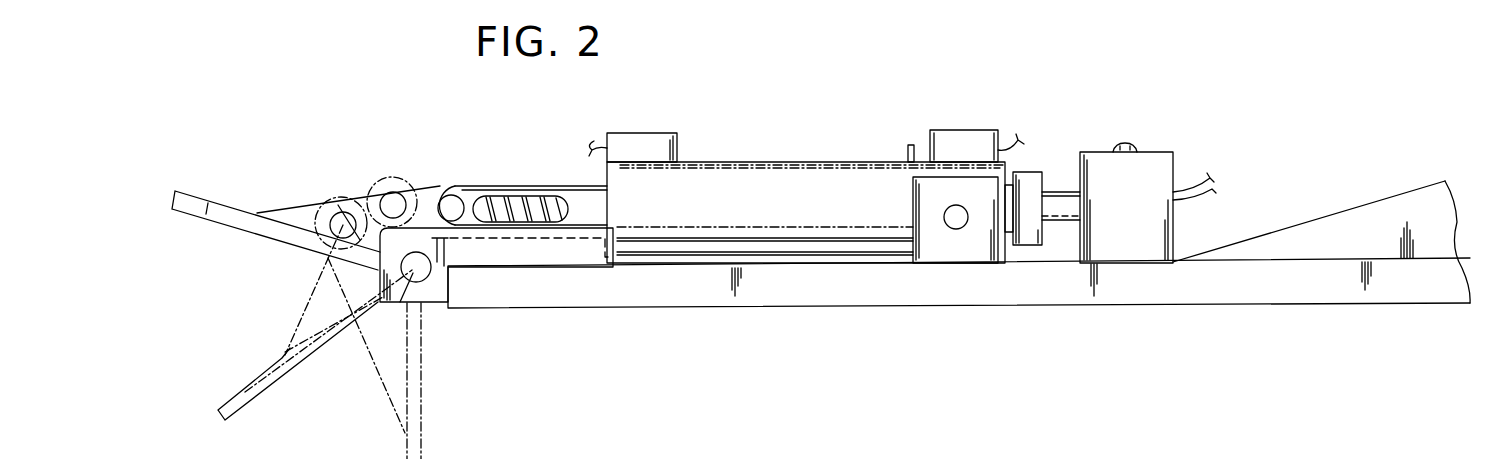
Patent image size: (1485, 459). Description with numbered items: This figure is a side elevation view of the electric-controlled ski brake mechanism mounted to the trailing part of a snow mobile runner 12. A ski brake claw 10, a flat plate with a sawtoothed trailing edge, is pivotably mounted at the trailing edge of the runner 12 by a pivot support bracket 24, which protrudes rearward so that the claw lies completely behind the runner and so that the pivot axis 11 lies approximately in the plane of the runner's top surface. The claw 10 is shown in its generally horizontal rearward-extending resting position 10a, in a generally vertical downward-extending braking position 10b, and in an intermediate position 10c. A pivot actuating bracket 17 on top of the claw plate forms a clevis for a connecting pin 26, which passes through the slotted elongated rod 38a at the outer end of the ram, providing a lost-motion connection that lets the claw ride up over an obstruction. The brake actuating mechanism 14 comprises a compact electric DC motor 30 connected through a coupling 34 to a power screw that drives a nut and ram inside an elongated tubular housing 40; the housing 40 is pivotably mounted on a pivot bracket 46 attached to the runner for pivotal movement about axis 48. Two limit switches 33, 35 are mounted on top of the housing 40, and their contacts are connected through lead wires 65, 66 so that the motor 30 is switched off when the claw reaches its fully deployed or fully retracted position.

The ski brake claw 10 is at (296, 183).
The resting position 10a is at (226, 208).
The braking position 10b is at (437, 458).
The intermediate position 10c is at (313, 348).
The pivot axis 11 is at (417, 268).
The runner 12 is at (1041, 292).
The brake actuating mechanism 14 is at (873, 93).
The pivot actuating bracket 17 is at (322, 209).
The pivot support bracket 24 is at (565, 258).
The connecting pin 26 is at (451, 208).
The electric DC motor 30 is at (1173, 155).
The limit switch 33 is at (660, 133).
The coupling 34 is at (1057, 191).
The limit switch 35 is at (982, 131).
The elongated rod 38a is at (484, 186).
The tubular housing 40 is at (757, 172).
The pivot bracket 46 is at (935, 252).
The pivot axis 48 is at (957, 220).
The lead wires 65 is at (600, 134).
The lead wires 66 is at (1020, 138).